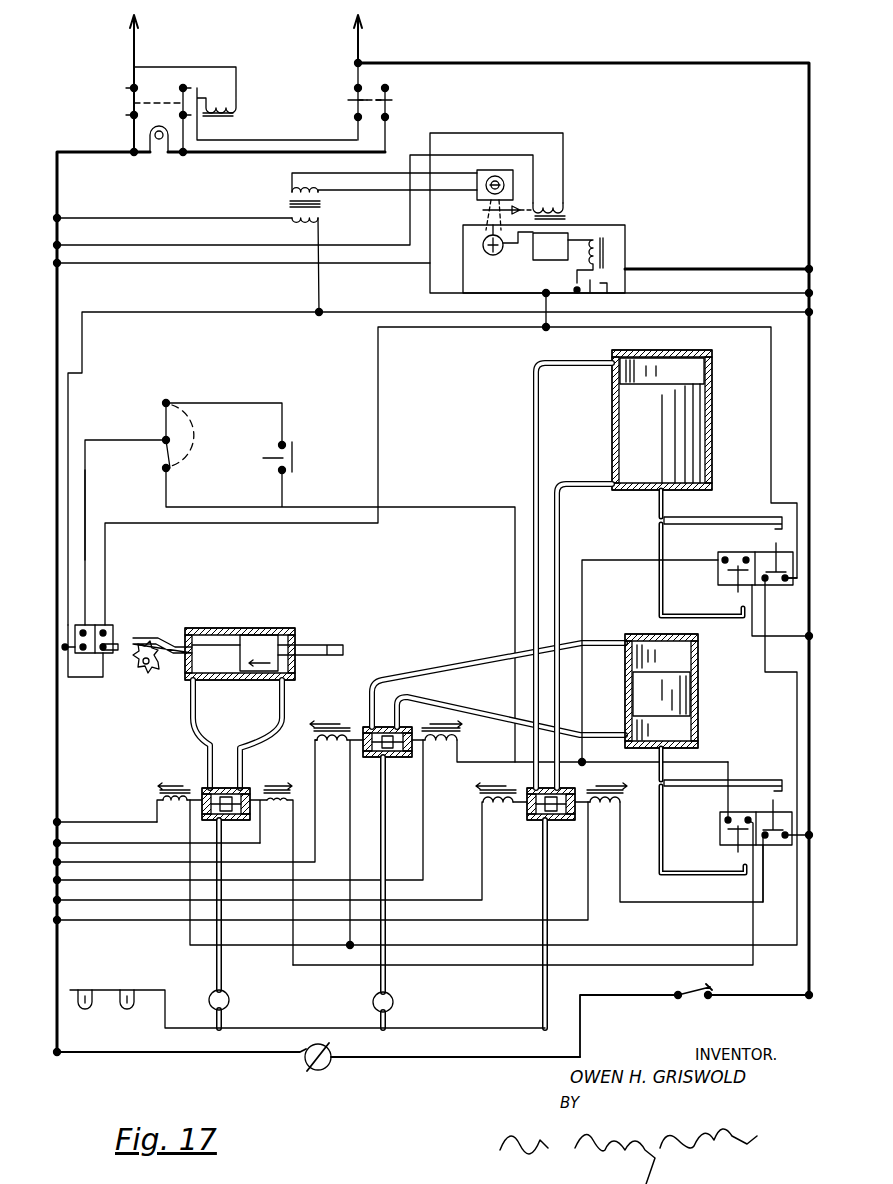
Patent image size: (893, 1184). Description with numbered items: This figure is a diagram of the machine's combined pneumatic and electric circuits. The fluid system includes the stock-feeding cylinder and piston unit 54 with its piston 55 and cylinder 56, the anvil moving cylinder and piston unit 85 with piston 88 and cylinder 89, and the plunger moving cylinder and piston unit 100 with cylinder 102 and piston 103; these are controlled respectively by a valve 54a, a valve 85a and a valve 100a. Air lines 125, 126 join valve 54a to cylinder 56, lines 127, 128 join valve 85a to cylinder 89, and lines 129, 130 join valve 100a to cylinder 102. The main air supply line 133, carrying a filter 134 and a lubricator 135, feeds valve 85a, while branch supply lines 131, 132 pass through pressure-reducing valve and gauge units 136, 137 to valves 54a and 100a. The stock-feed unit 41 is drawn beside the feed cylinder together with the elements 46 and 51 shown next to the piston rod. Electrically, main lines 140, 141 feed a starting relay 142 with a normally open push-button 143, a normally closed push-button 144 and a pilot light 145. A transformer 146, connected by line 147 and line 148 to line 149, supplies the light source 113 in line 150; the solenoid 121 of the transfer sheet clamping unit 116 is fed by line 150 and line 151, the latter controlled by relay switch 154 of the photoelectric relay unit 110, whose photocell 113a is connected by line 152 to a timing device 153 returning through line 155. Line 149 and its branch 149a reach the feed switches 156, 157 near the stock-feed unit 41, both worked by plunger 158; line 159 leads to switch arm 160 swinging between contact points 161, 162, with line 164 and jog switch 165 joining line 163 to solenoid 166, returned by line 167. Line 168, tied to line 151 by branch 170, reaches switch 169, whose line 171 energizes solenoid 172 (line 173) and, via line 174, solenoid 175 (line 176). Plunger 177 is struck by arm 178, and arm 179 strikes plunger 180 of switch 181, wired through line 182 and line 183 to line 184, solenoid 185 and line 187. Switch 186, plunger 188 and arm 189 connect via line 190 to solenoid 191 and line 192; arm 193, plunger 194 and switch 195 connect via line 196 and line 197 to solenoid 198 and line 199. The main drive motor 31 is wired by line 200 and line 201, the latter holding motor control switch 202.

The main line 140 is at (131, 46).
The main line 141 is at (362, 44).
The starting relay 142 is at (180, 78).
The normally open push-button 143 is at (367, 85).
The normally closed push-button 144 is at (390, 90).
The pilot light 145 is at (159, 142).
The transformer 146 is at (292, 200).
The line 147 is at (168, 218).
The line 148 is at (316, 278).
The line 149 is at (249, 312).
The branch 149a is at (70, 652).
The line 150 is at (370, 245).
The line 151 is at (515, 133).
The line 152 is at (374, 265).
The timing device 153 is at (563, 238).
The relay switch 154 is at (600, 262).
The line 155 is at (735, 269).
The normally open feed switch 156 is at (74, 630).
The normally closed feed switch 157 is at (108, 626).
The plunger 158 is at (118, 644).
The line 159 is at (86, 510).
The switch arm 160 is at (165, 458).
The contact point 161 is at (164, 472).
The contact point 162 is at (157, 400).
The line 163 is at (218, 507).
The line 164 is at (238, 403).
The push-button jog switch 165 is at (278, 452).
The solenoid 166 is at (497, 812).
The line 167 is at (481, 862).
The line 168 is at (772, 445).
The normally open switch 169 is at (775, 585).
The branch 170 is at (544, 328).
The line 171 is at (778, 676).
The solenoid 172 is at (170, 818).
The line 173 is at (92, 820).
The line 174 is at (330, 825).
The solenoid 175 is at (332, 745).
The line 176 is at (314, 757).
The plunger 177 is at (776, 545).
The arm 178 is at (730, 517).
The arm 179 is at (682, 612).
The plunger 180 is at (738, 590).
The normally open switch 181 is at (724, 556).
The line 182 is at (786, 638).
The line 183 is at (624, 563).
The line 184 is at (488, 762).
The solenoid 185 is at (451, 746).
The switch 186 is at (720, 838).
The line 187 is at (422, 858).
The plunger 188 is at (735, 850).
The arm 189 is at (716, 880).
The line 190 is at (590, 965).
The solenoid 191 is at (275, 838).
The line 192 is at (124, 842).
The arm 193 is at (746, 778).
The plunger 194 is at (771, 812).
The normally open switch 195 is at (768, 838).
The line 196 is at (806, 832).
The line 197 is at (652, 903).
The solenoid 198 is at (606, 812).
The line 199 is at (587, 864).
The line 200 is at (240, 1054).
The line 201 is at (581, 1030).
The motor control switch 202 is at (690, 997).
The photoelectric relay unit 110 is at (637, 224).
The light source 113 is at (502, 175).
The photocell 113a is at (500, 255).
The transfer sheet clamping unit 116 is at (476, 214).
The solenoid 121 is at (548, 204).
The air line 125 is at (190, 712).
The air line 126 is at (250, 722).
The line 127 is at (532, 402).
The line 128 is at (568, 482).
The line 129 is at (468, 665).
The line 130 is at (466, 706).
The air supply line 131 is at (224, 968).
The supply line 132 is at (388, 976).
The main air supply line 133 is at (541, 986).
The filter 134 is at (85, 1010).
The lubricator 135 is at (127, 1010).
The pressure-reducing valve and gauge unit 136 is at (229, 1000).
The pressure-reducing valve and gauge unit 137 is at (393, 1003).
The main drive motor 31 is at (326, 1064).
The stock-feed unit 41 is at (304, 677).
The ratchet wheel 46 is at (161, 693).
The pawl arm 51 is at (160, 636).
The stock-feeding cylinder and piston unit 54 is at (214, 630).
The valve 54a is at (249, 783).
The piston 55 is at (268, 638).
The cylinder 56 is at (230, 642).
The anvil moving cylinder and piston unit 85 is at (702, 466).
The valve 85a is at (533, 832).
The piston 88 is at (640, 412).
The cylinder 89 is at (712, 372).
The plunger moving cylinder and piston unit 100 is at (694, 724).
The valve 100a is at (401, 767).
The cylinder 102 is at (700, 664).
The piston 103 is at (640, 692).